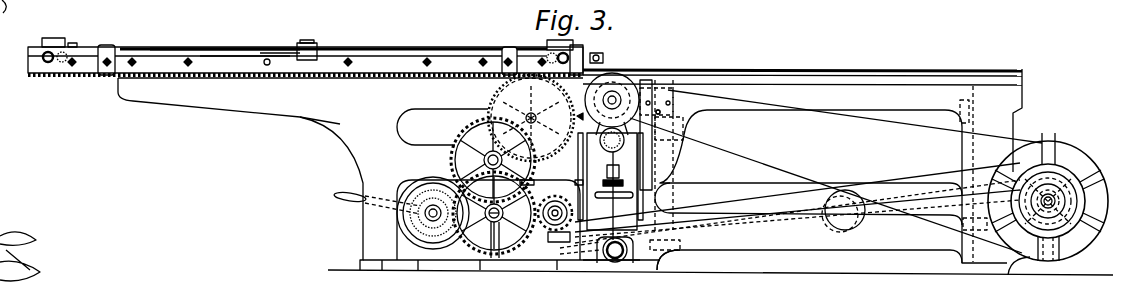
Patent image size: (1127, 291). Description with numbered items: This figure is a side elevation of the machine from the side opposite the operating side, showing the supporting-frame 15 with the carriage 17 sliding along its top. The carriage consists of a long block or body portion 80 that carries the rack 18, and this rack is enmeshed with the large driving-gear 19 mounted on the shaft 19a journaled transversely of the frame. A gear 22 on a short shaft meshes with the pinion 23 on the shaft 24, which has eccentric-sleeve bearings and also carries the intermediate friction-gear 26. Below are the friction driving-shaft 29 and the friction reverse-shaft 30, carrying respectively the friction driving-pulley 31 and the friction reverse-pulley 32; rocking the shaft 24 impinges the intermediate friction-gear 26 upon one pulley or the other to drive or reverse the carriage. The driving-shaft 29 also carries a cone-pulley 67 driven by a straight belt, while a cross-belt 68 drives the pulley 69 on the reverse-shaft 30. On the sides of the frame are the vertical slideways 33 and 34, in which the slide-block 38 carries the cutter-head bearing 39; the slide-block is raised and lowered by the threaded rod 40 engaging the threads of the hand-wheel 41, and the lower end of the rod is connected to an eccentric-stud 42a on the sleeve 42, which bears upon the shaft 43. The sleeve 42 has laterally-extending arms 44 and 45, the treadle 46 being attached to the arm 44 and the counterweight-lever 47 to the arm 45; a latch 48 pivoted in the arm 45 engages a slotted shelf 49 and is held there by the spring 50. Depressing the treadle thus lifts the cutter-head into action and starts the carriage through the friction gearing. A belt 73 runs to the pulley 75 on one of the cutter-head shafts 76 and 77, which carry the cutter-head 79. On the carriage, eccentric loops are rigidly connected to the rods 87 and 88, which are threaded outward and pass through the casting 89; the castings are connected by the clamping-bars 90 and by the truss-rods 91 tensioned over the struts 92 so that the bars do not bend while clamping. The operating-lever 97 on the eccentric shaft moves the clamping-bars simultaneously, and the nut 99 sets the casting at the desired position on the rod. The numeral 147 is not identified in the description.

The supporting-frame 15 is at (344, 135).
The carriage 17 is at (275, 52).
The rack 18 is at (106, 75).
The driving-gear 19 is at (492, 92).
The shaft 19a is at (531, 113).
The gear 22 is at (460, 135).
The pinion 23 is at (537, 186).
The shaft 24 is at (486, 222).
The intermediate friction-gear 26 is at (496, 254).
The friction driving-shaft 29 is at (398, 222).
The friction reverse-shaft 30 is at (556, 238).
The friction driving-pulley 31 is at (428, 226).
The friction reverse-pulley 32 is at (545, 213).
The vertical slideway 33 is at (660, 180).
The vertical slideway 34 is at (590, 156).
The slide-block 38 is at (612, 134).
The cutter-head bearing 39 is at (670, 112).
The threaded rod 40 is at (604, 196).
The hand-wheel 41 is at (640, 195).
The sleeve 42 is at (615, 263).
The eccentric-stud 42a is at (632, 263).
The shaft 43 is at (604, 267).
The arm 44 is at (580, 253).
The arm 45 is at (667, 252).
The treadle 46 is at (350, 199).
The counterweight-lever 47 is at (684, 250).
The latch 48 is at (665, 101).
The slotted shelf 49 is at (662, 97).
The spring 50 is at (692, 148).
The cone-pulley 67 is at (440, 242).
The cross-belt 68 is at (730, 208).
The pulley 69 is at (571, 186).
The belt 73 is at (763, 166).
The pulley 75 is at (578, 122).
The cutter-head shaft 76 is at (613, 169).
The cutter-head shaft 77 is at (612, 100).
The cutter-head 79 is at (600, 97).
The block or body portion 80 is at (198, 49).
The rod 87 is at (62, 63).
The rod 88 is at (40, 60).
The casting 89 is at (307, 62).
The clamping-bar 90 is at (335, 63).
The truss-rod 91 is at (244, 54).
The strut 92 is at (318, 48).
The operating-lever 97 is at (602, 58).
The nut 99 is at (47, 63).
The belt 147 is at (920, 200).